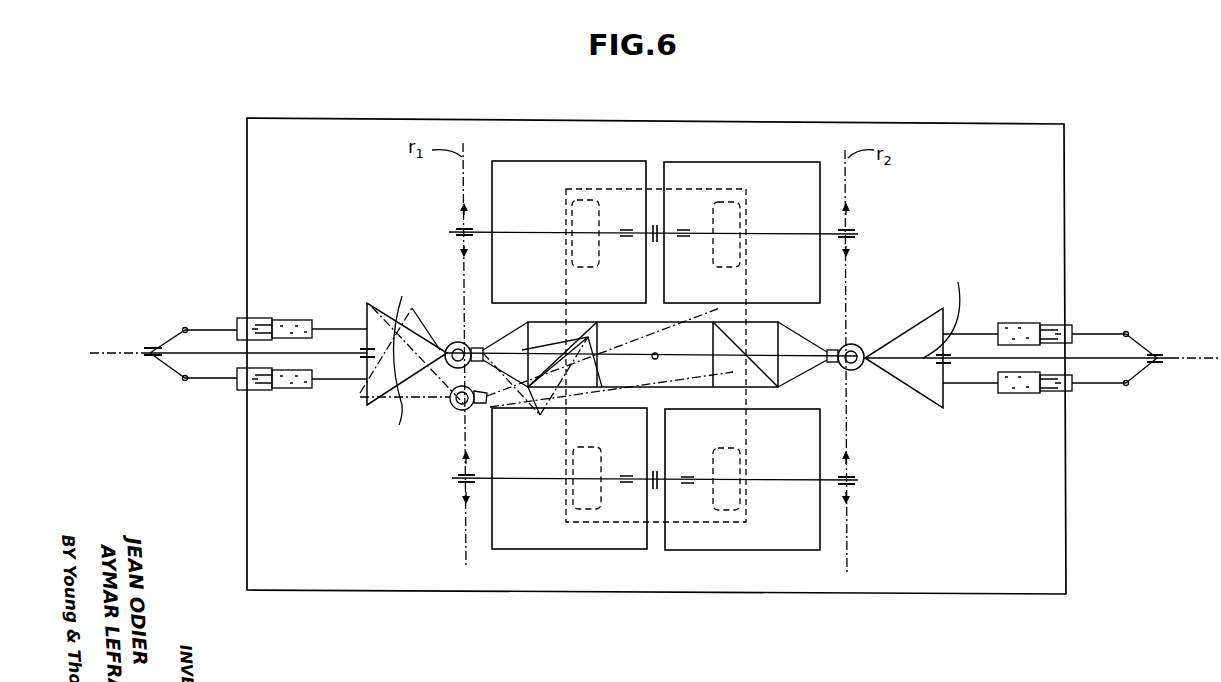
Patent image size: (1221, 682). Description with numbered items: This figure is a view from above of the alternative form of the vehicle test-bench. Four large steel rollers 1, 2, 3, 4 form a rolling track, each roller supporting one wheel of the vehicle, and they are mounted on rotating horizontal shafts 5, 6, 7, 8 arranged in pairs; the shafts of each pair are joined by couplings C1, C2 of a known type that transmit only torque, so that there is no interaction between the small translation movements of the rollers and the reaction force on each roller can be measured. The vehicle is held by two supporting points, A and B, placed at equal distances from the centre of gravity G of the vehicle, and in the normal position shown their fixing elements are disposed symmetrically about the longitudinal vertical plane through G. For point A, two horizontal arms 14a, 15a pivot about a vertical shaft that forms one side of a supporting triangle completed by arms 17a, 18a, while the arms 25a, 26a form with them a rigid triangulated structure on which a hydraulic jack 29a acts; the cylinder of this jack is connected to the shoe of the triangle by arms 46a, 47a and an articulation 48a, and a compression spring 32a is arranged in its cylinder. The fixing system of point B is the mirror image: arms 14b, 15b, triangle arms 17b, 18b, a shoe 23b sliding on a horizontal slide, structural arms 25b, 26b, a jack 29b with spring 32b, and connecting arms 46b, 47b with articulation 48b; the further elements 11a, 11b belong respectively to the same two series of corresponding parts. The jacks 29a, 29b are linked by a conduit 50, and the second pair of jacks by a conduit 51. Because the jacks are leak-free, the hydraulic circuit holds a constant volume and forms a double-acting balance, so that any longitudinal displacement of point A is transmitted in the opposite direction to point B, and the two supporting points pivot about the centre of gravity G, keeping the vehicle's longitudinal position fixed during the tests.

The metal roller 1 is at (572, 543).
The metal roller 2 is at (745, 543).
The metal roller 3 is at (583, 168).
The metal roller 4 is at (716, 172).
The rotating horizontal shaft 5 is at (452, 478).
The rotating horizontal shaft 6 is at (857, 481).
The rotating horizontal shaft 7 is at (450, 232).
The rotating horizontal shaft 8 is at (857, 233).
The gear box 11a is at (467, 344).
The gear box 11b is at (846, 346).
The horizontal arm 14a is at (307, 351).
The horizontal arm 15a is at (307, 351).
The horizontal arm 14b is at (1013, 351).
The horizontal arm 15b is at (1013, 351).
The arm of supporting triangle 17a is at (636, 388).
The arm of supporting triangle 18a is at (636, 388).
The arm of supporting triangle 17b is at (1153, 402).
The arm of supporting triangle 18b is at (1153, 402).
The shoe 23b is at (148, 348).
The arm 25a is at (307, 351).
The arm 26a is at (366, 304).
The arm 25b is at (1013, 351).
The arm 26b is at (1013, 351).
The hydraulic jack 29a is at (302, 416).
The hydraulic jack 29b is at (1034, 419).
The compression spring 32a is at (287, 392).
The compression spring 32b is at (1046, 398).
The arm 46a is at (174, 354).
The arm 46b is at (1134, 352).
The arm 47a is at (174, 354).
The arm 47b is at (1134, 352).
The articulation 48a is at (158, 342).
The articulation 48b is at (1092, 332).
The conduit 50 is at (656, 353).
The conduit 51 is at (971, 594).
The coupling C1 is at (658, 489).
The coupling C2 is at (654, 224).
The centre of gravity G is at (652, 361).